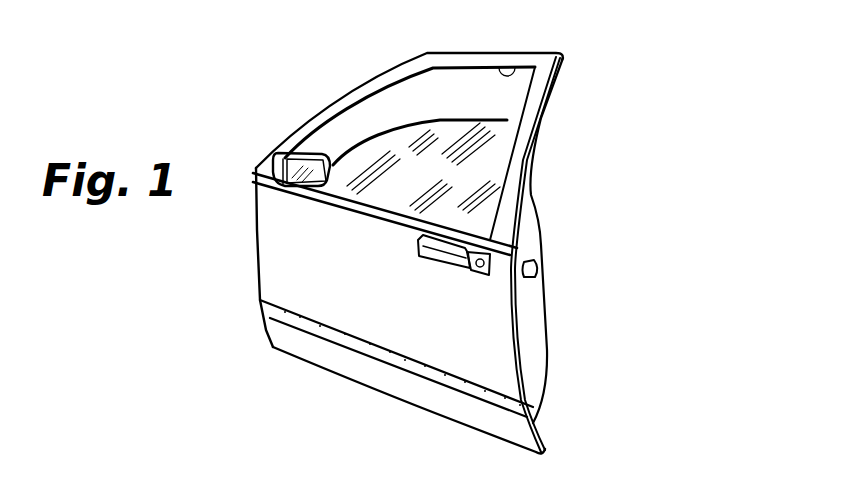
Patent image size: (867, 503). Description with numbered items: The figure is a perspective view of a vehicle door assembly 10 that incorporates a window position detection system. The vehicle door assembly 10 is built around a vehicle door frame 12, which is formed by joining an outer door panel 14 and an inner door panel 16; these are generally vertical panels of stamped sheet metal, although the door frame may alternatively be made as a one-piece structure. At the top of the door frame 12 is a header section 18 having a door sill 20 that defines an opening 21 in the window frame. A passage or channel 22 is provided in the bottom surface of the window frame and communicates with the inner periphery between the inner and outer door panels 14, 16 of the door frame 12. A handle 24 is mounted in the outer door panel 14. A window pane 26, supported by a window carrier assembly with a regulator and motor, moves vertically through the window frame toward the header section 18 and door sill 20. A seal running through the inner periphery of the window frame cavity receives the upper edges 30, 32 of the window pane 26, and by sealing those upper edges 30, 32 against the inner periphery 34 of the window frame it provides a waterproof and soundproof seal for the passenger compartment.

The vehicle door assembly 10 is at (626, 153).
The vehicle door frame 12 is at (284, 273).
The outer door panel 14 is at (273, 337).
The inner door panel 16 is at (538, 355).
The header section 18 is at (460, 58).
The door sill 20 is at (357, 97).
The opening 21 is at (507, 98).
The passage or channel 22 is at (370, 200).
The handle 24 is at (540, 268).
The window pane 26 is at (474, 178).
The upper edge of window pane 30 is at (507, 118).
The upper edge of window pane 32 is at (365, 145).
The inner periphery of window frame 34 is at (518, 68).